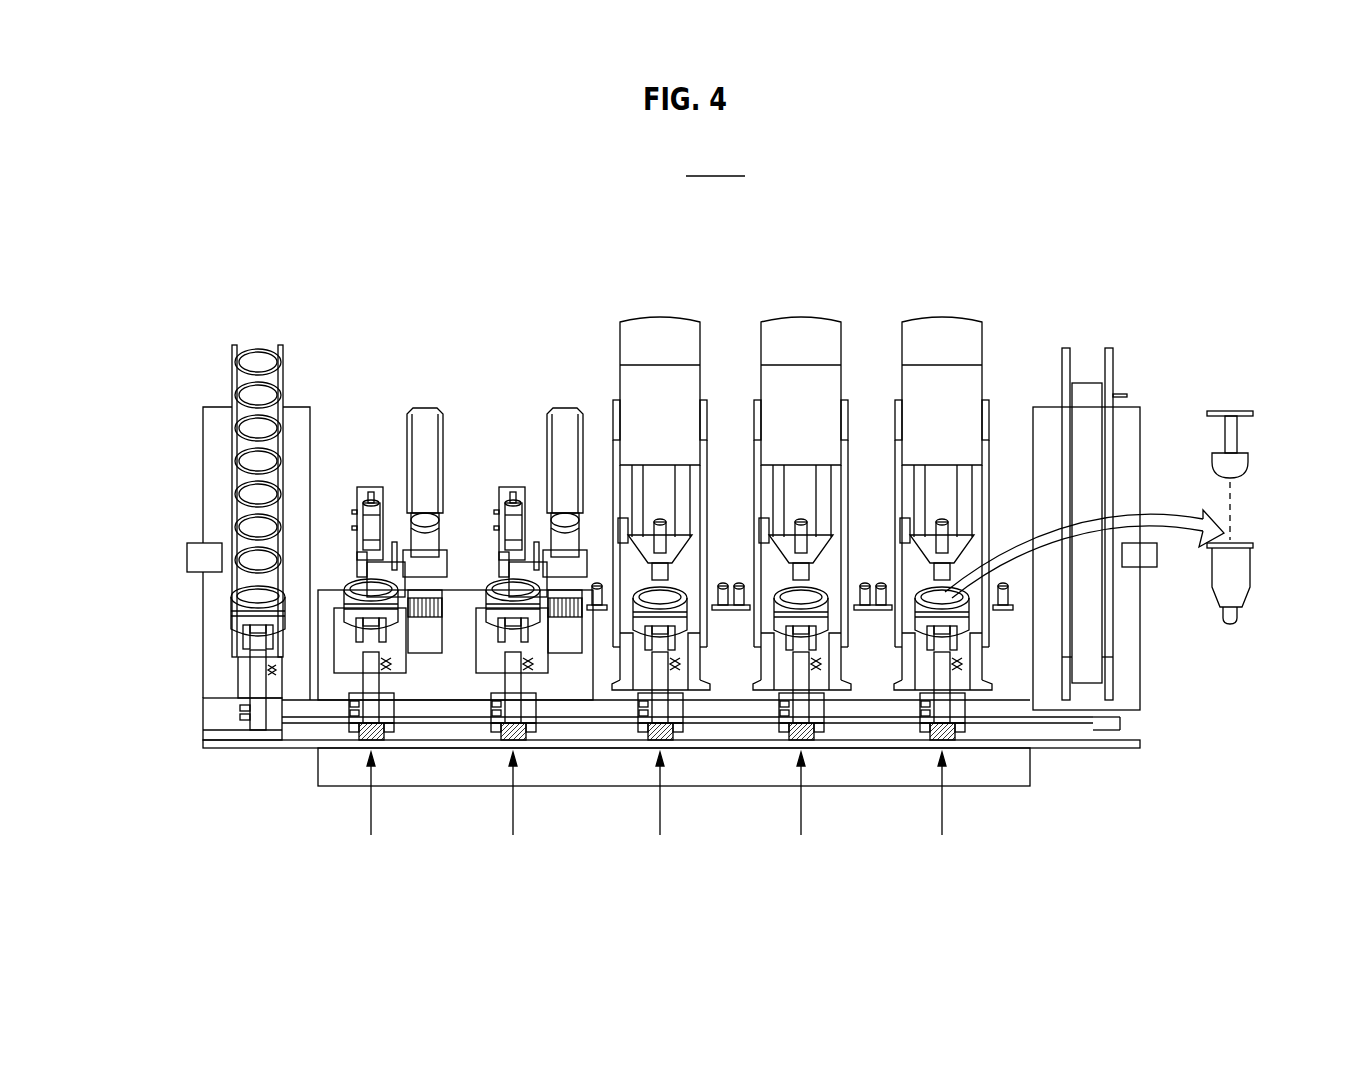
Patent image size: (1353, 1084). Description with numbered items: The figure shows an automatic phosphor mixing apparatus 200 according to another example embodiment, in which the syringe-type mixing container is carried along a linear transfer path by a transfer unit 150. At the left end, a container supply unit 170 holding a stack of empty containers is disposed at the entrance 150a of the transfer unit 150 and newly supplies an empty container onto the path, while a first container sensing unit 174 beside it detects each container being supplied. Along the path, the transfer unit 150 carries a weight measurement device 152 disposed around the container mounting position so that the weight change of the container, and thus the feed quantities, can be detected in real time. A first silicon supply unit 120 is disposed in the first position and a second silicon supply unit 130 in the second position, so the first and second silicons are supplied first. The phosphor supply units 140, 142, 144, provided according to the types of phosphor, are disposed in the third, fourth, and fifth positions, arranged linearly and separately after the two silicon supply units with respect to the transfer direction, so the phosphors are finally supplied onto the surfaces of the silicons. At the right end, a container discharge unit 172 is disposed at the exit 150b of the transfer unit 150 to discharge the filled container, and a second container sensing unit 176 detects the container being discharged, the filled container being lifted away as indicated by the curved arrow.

The automatic phosphor mixing apparatus 200 is at (709, 504).
The first silicon supply unit 120 is at (423, 418).
The second silicon supply unit 130 is at (563, 418).
The phosphor supply unit 140 is at (660, 318).
The phosphor supply unit 142 is at (801, 318).
The phosphor supply unit 144 is at (942, 318).
The transfer unit 150 is at (428, 707).
The entrance 150a is at (220, 707).
The exit 150b is at (1120, 727).
The weight measurement device 152 is at (360, 732).
The container supply unit 170 is at (232, 347).
The container discharge unit 172 is at (1112, 432).
The first container sensing unit 174 is at (190, 572).
The second container sensing unit 176 is at (1157, 553).